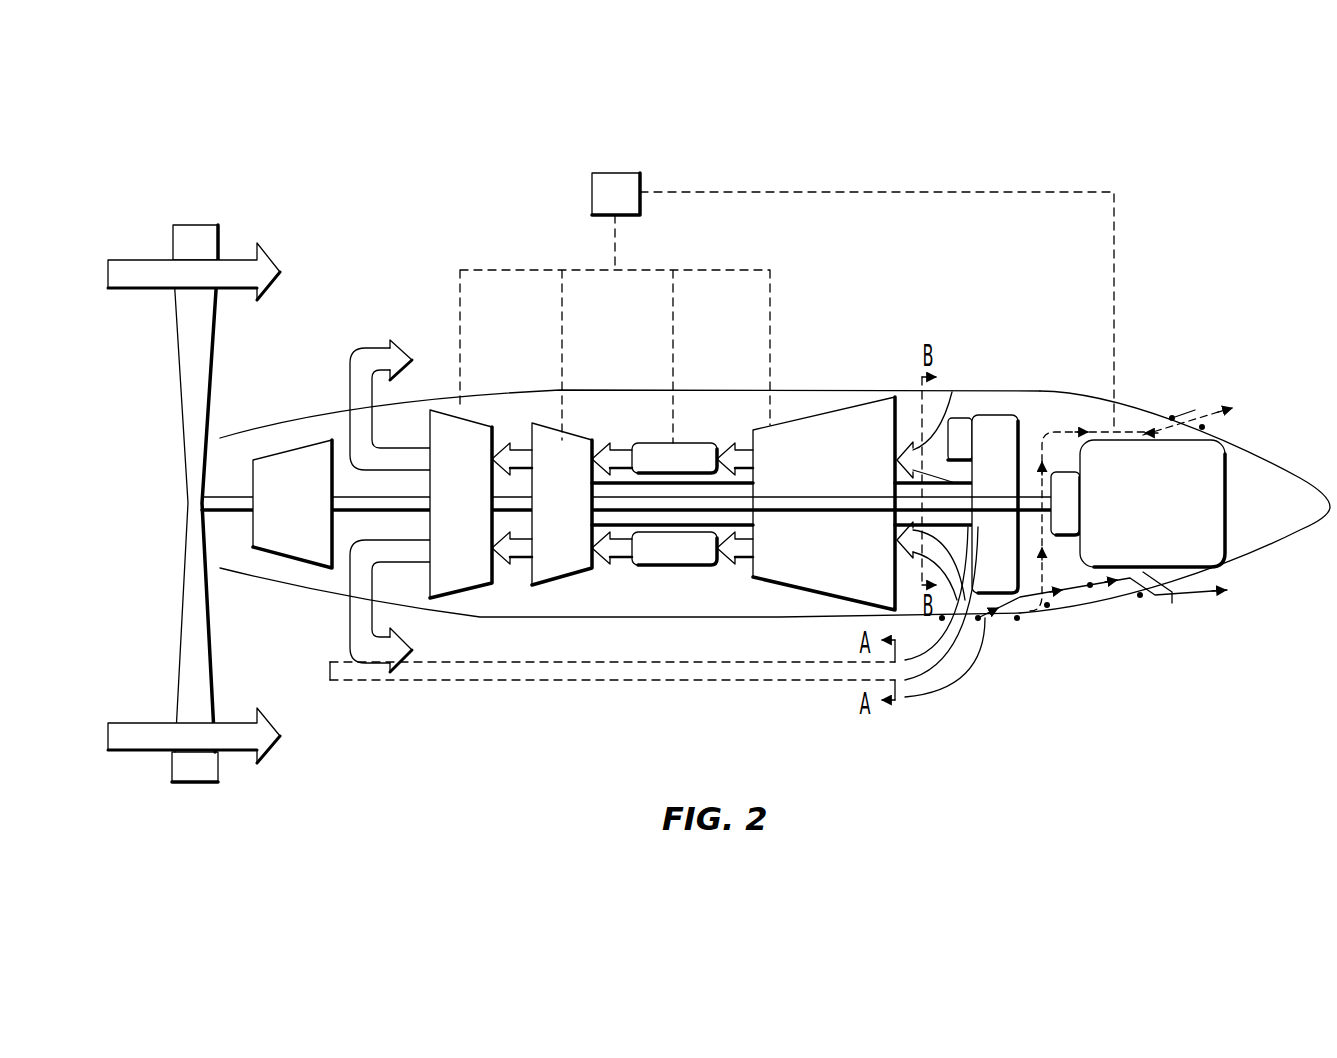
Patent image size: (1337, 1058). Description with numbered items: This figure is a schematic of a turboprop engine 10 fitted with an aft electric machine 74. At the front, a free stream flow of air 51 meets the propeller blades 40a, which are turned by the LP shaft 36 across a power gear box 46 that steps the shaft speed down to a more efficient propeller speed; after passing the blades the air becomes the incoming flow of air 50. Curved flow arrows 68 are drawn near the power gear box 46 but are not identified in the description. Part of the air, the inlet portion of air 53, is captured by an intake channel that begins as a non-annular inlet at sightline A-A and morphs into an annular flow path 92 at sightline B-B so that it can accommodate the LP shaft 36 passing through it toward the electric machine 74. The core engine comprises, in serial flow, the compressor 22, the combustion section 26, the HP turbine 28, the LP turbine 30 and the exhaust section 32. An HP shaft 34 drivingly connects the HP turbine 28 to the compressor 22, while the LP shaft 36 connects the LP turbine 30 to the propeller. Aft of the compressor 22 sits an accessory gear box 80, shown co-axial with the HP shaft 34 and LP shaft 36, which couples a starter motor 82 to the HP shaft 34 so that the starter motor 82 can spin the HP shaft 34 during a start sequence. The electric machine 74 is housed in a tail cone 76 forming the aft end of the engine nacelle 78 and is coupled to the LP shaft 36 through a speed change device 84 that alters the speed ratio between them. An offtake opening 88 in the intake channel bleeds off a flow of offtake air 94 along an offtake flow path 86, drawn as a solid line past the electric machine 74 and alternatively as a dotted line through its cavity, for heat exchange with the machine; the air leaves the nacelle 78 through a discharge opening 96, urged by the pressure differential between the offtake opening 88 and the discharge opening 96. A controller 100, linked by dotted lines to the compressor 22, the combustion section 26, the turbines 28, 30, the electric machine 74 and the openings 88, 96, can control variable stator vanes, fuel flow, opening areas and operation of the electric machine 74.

The turboprop engine 10 is at (410, 212).
The compressor 22 is at (822, 416).
The combustion section 26 is at (665, 442).
The high pressure turbine 28 is at (580, 436).
The low pressure turbine 30 is at (455, 418).
The exhaust section 32 is at (328, 396).
The HP shaft 34 is at (960, 483).
The LP shaft 36 is at (348, 512).
The propeller blades 40a is at (188, 385).
The power gear box 46 is at (290, 448).
The incoming flow of air 50 is at (232, 752).
The free stream flow of air 51 is at (147, 258).
The inlet portion of air 53 is at (920, 450).
The bypass flow arrows 68 is at (355, 365).
The electric machine 74 is at (1225, 525).
The tail cone 76 is at (1137, 411).
The engine nacelle 78 is at (530, 392).
The accessory gear box 80 is at (1000, 415).
The starter motor 82 is at (957, 418).
The speed change device 84 is at (1062, 472).
The offtake flow path 86 is at (1047, 606).
The offtake opening 88 is at (983, 639).
The annular flow path 92 is at (923, 573).
The flow of offtake air 94 is at (1090, 586).
The discharge opening 96 is at (1204, 396).
The controller 100 is at (592, 190).